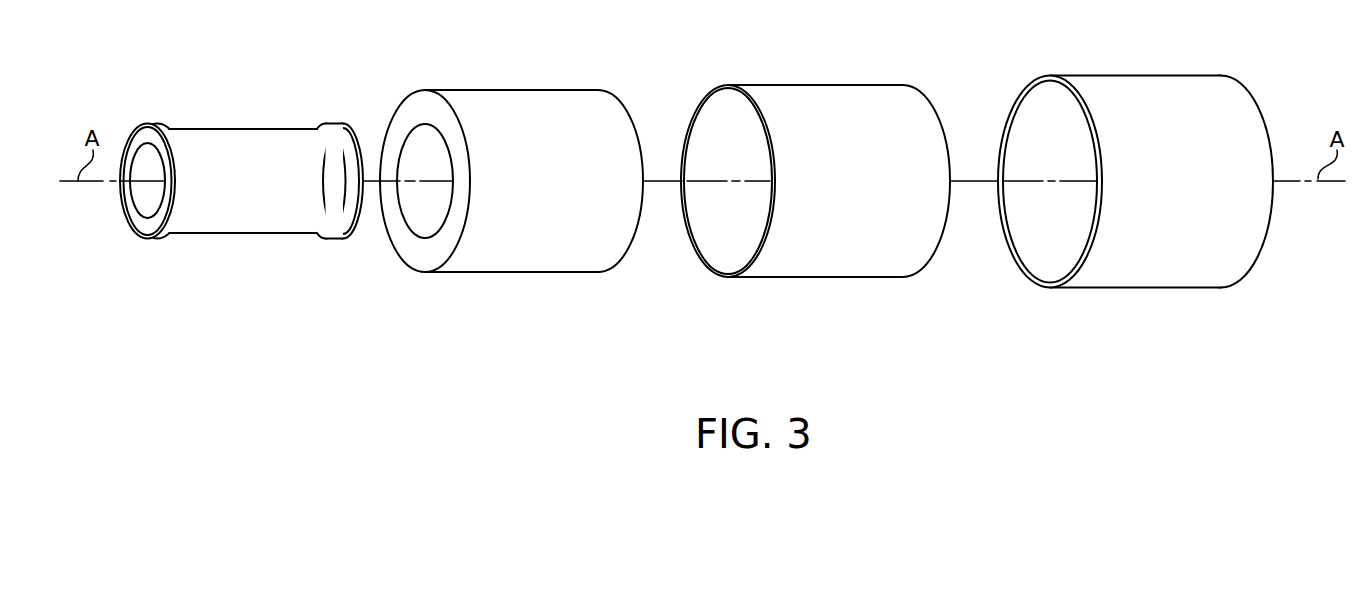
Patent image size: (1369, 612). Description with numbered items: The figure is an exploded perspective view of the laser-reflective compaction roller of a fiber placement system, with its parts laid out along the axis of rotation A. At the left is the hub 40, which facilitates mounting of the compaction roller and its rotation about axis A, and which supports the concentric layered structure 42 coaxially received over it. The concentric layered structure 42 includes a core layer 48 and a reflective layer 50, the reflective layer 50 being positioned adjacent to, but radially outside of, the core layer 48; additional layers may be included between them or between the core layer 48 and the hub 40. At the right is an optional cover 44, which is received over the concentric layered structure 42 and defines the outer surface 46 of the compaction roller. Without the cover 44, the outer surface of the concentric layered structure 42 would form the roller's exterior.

The hub 40 is at (252, 210).
The concentric layered structure 42 is at (665, 199).
The cover 44 is at (1135, 206).
The outer surface 46 is at (1155, 194).
The core layer 48 is at (515, 103).
The reflective layer 50 is at (815, 156).